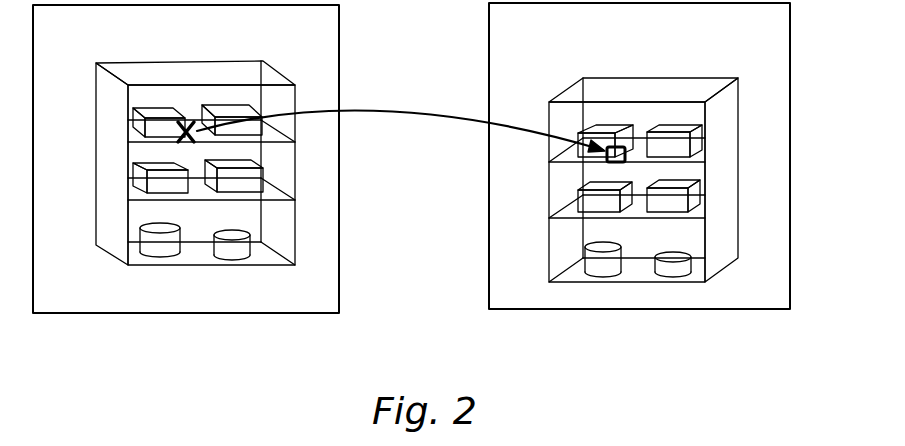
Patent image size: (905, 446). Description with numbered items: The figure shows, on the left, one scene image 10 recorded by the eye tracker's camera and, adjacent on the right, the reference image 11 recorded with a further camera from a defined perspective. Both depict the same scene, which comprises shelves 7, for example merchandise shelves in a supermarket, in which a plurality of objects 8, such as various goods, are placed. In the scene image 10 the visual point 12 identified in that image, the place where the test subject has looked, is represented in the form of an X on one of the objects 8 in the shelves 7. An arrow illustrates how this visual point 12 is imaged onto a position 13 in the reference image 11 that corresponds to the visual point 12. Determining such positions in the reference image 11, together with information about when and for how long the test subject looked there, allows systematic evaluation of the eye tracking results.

The shelves 7 is at (138, 62).
The objects 8 is at (140, 125).
The scene image 10 is at (339, 41).
The reference image 11 is at (489, 263).
The visual point 12 is at (184, 122).
The position 13 is at (617, 144).